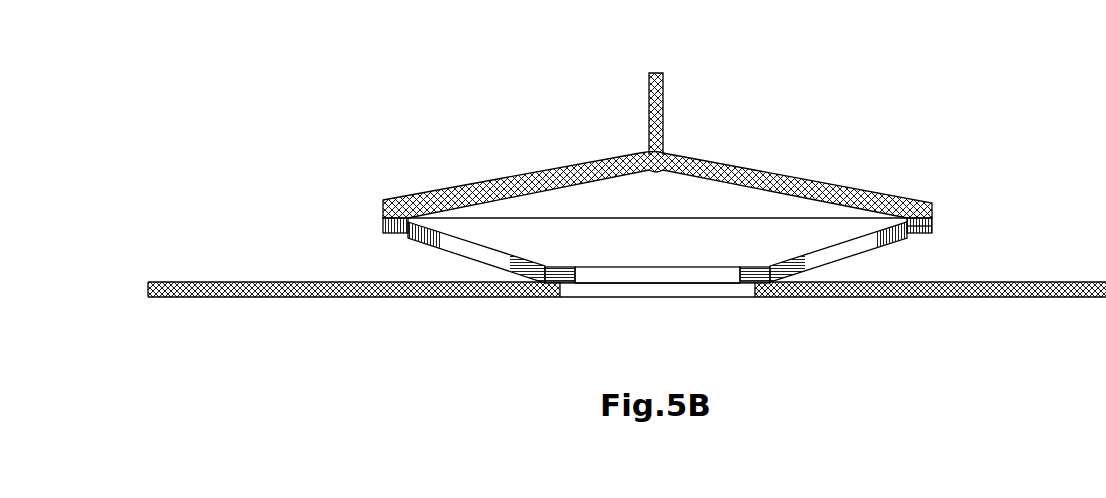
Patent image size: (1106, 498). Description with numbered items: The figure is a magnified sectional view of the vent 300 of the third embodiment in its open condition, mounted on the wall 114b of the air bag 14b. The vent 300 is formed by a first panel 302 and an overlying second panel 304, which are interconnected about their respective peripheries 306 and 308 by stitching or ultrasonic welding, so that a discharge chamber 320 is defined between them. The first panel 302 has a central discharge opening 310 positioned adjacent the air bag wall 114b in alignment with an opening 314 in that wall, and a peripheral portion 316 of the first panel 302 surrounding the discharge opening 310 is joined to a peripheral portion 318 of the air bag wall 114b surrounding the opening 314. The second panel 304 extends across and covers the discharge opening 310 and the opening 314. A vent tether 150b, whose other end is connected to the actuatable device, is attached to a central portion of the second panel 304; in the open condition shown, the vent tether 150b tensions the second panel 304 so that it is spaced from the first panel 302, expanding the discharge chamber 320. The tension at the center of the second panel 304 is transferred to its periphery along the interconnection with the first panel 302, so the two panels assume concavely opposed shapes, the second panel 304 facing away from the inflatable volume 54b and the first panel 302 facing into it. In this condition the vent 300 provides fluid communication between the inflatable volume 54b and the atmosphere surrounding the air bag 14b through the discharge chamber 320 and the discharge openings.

The vent 300 is at (400, 160).
The first panel 302 is at (425, 243).
The second panel 304 is at (532, 172).
The periphery of the first panel 306 is at (932, 228).
The periphery of the second panel 308 is at (932, 208).
The discharge opening 310 is at (655, 275).
The opening in the air bag wall 314 is at (671, 290).
The peripheral portion of the first panel 316 is at (752, 267).
The peripheral portion of the air bag wall 318 is at (748, 284).
The discharge chamber 320 is at (604, 208).
The vent tether 150b is at (660, 93).
The inflatable volume 54b is at (955, 112).
The wall of the air bag 114b is at (233, 288).
The air bag 14b is at (1010, 298).